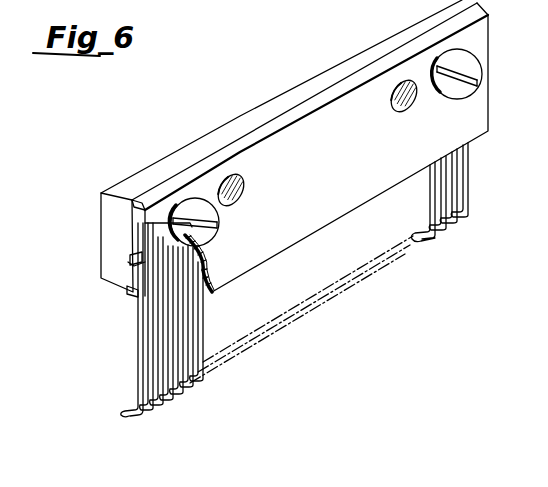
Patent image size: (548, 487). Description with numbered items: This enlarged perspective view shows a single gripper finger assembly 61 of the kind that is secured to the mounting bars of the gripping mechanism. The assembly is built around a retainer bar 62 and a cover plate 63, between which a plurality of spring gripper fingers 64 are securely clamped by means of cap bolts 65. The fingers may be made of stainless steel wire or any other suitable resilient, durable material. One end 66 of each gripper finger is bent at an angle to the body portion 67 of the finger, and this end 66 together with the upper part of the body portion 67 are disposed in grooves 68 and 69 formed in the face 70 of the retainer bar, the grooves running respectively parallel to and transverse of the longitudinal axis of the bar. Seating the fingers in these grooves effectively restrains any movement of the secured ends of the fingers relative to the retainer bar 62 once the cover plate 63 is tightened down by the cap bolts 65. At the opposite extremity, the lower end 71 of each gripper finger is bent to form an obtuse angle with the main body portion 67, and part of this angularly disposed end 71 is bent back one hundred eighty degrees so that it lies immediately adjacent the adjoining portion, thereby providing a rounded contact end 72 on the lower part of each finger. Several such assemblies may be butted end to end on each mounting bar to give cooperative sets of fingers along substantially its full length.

The contact block 61 is at (324, 62).
The retainer bar 62 is at (110, 218).
The cover plate 63 is at (265, 266).
The spring gripper fingers 64 is at (297, 280).
The cap bolts 65 is at (210, 232).
The end of gripper finger 66 is at (132, 263).
The body portion of gripper finger 67 is at (138, 333).
The groove 68 is at (131, 259).
The groove 69 is at (132, 295).
The face of retainer bar 70 is at (134, 233).
The lower end of gripper finger 71 is at (127, 410).
The rounded contact end 72 is at (118, 419).